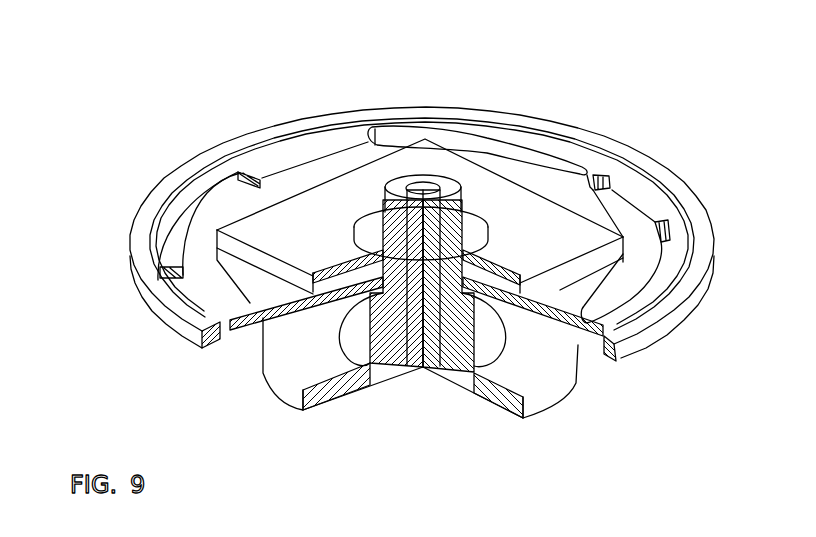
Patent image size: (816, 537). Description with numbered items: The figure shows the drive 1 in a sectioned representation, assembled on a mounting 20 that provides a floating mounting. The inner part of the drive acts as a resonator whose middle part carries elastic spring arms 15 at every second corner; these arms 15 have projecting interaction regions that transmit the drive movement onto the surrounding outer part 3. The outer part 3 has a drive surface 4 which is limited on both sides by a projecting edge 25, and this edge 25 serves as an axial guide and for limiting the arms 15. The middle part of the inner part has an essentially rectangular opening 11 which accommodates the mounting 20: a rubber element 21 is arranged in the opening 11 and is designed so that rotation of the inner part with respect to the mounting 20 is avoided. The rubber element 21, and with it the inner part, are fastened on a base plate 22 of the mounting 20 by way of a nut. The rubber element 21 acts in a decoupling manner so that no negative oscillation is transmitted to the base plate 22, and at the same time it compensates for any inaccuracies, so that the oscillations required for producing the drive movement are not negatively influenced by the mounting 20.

The drive 1 is at (674, 74).
The outer part 3 is at (470, 119).
The drive surface 4 is at (298, 141).
The opening 11 is at (340, 237).
The arm 15 is at (165, 249).
The mounting 20 is at (408, 427).
The rubber element 21 is at (470, 233).
The base plate 22 is at (297, 362).
The projecting edge 25 is at (648, 172).